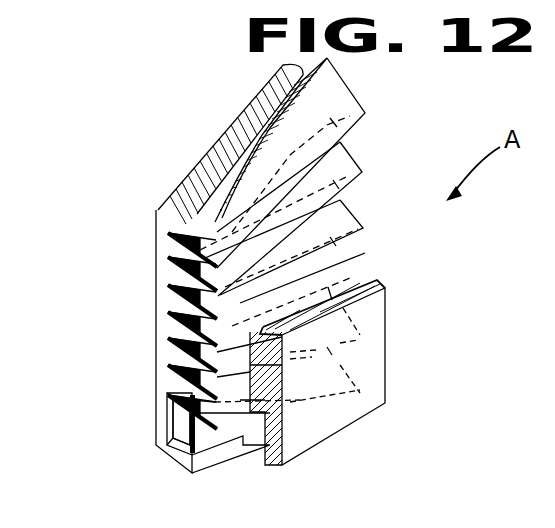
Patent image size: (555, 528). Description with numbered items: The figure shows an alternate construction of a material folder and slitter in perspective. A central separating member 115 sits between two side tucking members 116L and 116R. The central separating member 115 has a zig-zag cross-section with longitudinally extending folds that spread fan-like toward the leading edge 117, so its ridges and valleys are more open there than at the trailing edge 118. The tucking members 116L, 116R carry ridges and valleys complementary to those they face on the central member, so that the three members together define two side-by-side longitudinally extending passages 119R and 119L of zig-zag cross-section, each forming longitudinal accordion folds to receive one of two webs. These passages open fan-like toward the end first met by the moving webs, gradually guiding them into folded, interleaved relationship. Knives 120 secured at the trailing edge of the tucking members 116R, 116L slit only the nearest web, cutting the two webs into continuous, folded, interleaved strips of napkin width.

The central separating member 115 is at (197, 437).
The right tucking member 116R is at (165, 400).
The left tucking member 116L is at (283, 458).
The leading edge 117 is at (360, 153).
The trailing edge 118 is at (177, 233).
The right longitudinal passage 119R is at (170, 295).
The left longitudinal passage 119L is at (265, 365).
The knives 120 is at (173, 342).